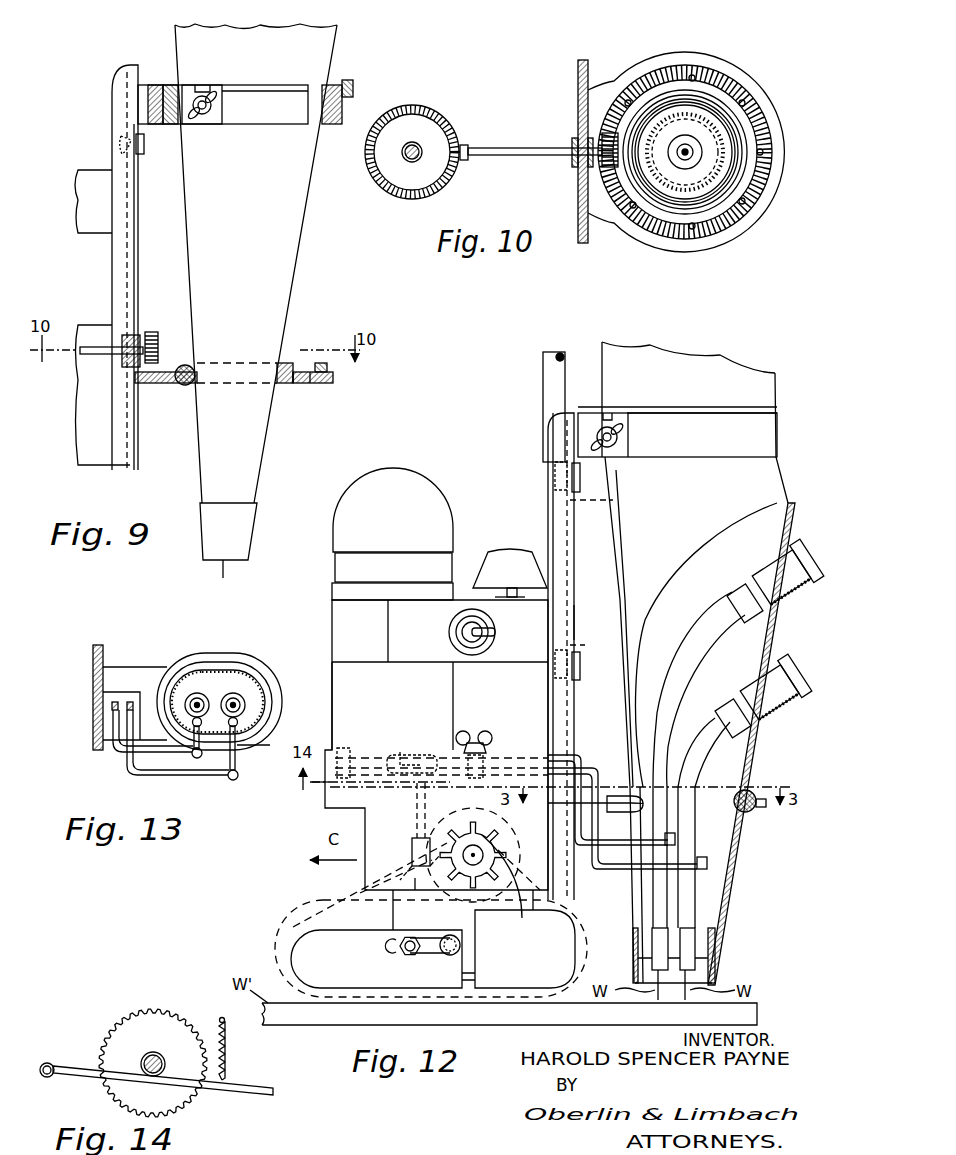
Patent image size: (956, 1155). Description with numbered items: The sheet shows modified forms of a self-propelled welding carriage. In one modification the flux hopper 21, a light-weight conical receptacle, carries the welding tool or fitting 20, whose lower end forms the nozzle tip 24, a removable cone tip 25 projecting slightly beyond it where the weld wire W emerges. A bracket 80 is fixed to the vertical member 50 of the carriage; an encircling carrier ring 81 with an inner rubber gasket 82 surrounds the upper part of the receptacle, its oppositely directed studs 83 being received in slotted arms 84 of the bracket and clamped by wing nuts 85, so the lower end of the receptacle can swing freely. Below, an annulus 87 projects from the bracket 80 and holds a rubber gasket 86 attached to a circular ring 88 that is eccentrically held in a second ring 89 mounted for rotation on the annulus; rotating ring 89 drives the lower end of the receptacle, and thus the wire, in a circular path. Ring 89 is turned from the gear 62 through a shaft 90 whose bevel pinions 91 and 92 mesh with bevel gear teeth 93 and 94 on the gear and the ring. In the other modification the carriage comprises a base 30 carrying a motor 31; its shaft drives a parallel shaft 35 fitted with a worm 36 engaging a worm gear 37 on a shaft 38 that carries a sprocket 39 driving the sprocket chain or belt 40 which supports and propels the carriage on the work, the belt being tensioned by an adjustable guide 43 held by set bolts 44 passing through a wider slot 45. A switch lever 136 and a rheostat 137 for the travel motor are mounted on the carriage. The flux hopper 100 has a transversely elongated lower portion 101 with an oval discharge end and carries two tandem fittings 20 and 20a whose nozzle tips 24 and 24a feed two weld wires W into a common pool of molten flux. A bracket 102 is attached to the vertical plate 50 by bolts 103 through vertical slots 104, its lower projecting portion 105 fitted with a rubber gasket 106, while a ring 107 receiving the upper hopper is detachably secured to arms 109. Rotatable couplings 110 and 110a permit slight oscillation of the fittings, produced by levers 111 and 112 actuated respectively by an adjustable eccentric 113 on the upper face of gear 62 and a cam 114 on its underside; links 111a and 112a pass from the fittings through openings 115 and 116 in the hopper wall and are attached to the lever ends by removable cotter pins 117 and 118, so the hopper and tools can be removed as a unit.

In FIG. 12, the fitting or tool 20 is at (690, 635).
In FIG. 13, the fitting or tool 20 is at (188, 692).
In FIG. 12, the second fitting 20a is at (700, 755).
In FIG. 13, the second fitting 20a is at (243, 700).
In FIG. 9, the hopper 21 is at (285, 240).
In FIG. 10, the hopper 21 is at (700, 85).
In FIG. 12, the nozzle tip 24 is at (655, 945).
In FIG. 12, the nozzle tip 24a is at (690, 948).
In FIG. 9, the cone tip 25 is at (202, 535).
In FIG. 12, the cone tip 25 is at (634, 968).
In FIG. 12, the base 30 is at (328, 795).
In FIG. 12, the motor 31 is at (340, 568).
In FIG. 12, the shaft 35 is at (412, 828).
In FIG. 12, the worm 36 is at (415, 878).
In FIG. 12, the worm gear 37 is at (488, 898).
In FIG. 12, the shaft 38 is at (522, 912).
In FIG. 12, the sprocket 39 is at (498, 838).
In FIG. 12, the sprocket chain 40 is at (275, 952).
In FIG. 12, the adjustable guide 43 is at (312, 930).
In FIG. 12, the set bolts 44 is at (413, 955).
In FIG. 12, the slot 45 is at (395, 950).
In FIG. 9, the vertical member 50 is at (112, 258).
In FIG. 10, the vertical member 50 is at (578, 68).
In FIG. 12, the vertical member 50 is at (548, 517).
In FIG. 13, the vertical member 50 is at (93, 655).
In FIG. 10, the gear 62 is at (412, 125).
In FIG. 12, the gear 62 is at (445, 762).
In FIG. 14, the gear 62 is at (120, 1025).
In FIG. 9, the bracket 80 is at (138, 252).
In FIG. 10, the bracket 80 is at (590, 200).
In FIG. 9, the carrier ring 81 is at (348, 99).
In FIG. 9, the rubber gasket 82 is at (338, 87).
In FIG. 9, the studs 83 is at (203, 114).
In FIG. 9, the slotted arms 84 is at (222, 108).
In FIG. 9, the wing nuts 85 is at (213, 83).
In FIG. 9, the rubber gasket 86 is at (285, 362).
In FIG. 10, the rubber gasket 86 is at (705, 100).
In FIG. 9, the annulus 87 is at (335, 378).
In FIG. 10, the annulus 87 is at (698, 250).
In FIG. 9, the circular ring 88 is at (297, 385).
In FIG. 10, the circular ring 88 is at (665, 210).
In FIG. 9, the second ring 89 is at (317, 385).
In FIG. 10, the second ring 89 is at (725, 210).
In FIG. 9, the shaft 90 is at (95, 343).
In FIG. 10, the shaft 90 is at (513, 147).
In FIG. 10, the bevel pinion 91 is at (464, 145).
In FIG. 9, the bevel pinion 92 is at (152, 330).
In FIG. 10, the bevel pinion 92 is at (600, 130).
In FIG. 10, the bevel gear teeth 93 is at (445, 178).
In FIG. 9, the bevel gear teeth 94 is at (322, 362).
In FIG. 10, the bevel gear teeth 94 is at (640, 80).
In FIG. 12, the flux hopper 100 is at (656, 357).
In FIG. 12, the lower portion 101 is at (716, 906).
In FIG. 13, the lower portion 101 is at (240, 665).
In FIG. 12, the bracket 102 is at (573, 614).
In FIG. 13, the bracket 102 is at (115, 667).
In FIG. 12, the bolts 103 is at (582, 477).
In FIG. 12, the slots 104 is at (610, 577).
In FIG. 12, the lower projecting portion 105 is at (762, 808).
In FIG. 13, the lower projecting portion 105 is at (268, 668).
In FIG. 12, the rubber gasket 106 is at (750, 814).
In FIG. 13, the rubber gasket 106 is at (215, 670).
In FIG. 12, the ring 107 is at (692, 418).
In FIG. 12, the arms 109 is at (628, 431).
In FIG. 12, the rotatable coupling 110 is at (740, 590).
In FIG. 12, the rotatable coupling 110a is at (718, 700).
In FIG. 12, the lever 111 is at (513, 752).
In FIG. 13, the lever 111 is at (115, 747).
In FIG. 13, the link 111a is at (203, 758).
In FIG. 12, the lever 112 is at (534, 752).
In FIG. 13, the lever 112 is at (125, 775).
In FIG. 14, the lever 112 is at (249, 1096).
In FIG. 13, the link 112a is at (238, 762).
In FIG. 12, the adjustable eccentric 113 is at (450, 737).
In FIG. 14, the cam 114 is at (163, 1060).
In FIG. 13, the opening 115 is at (188, 736).
In FIG. 13, the opening 116 is at (268, 744).
In FIG. 12, the cotter pin 117 is at (675, 836).
In FIG. 13, the cotter pin 117 is at (196, 760).
In FIG. 12, the cotter pin 118 is at (705, 860).
In FIG. 13, the cotter pin 118 is at (240, 778).
In FIG. 12, the button or lever 136 is at (494, 628).
In FIG. 12, the rheostat 137 is at (497, 566).
In FIG. 9, the weld wire W is at (219, 567).
In FIG. 10, the weld wire W is at (690, 150).